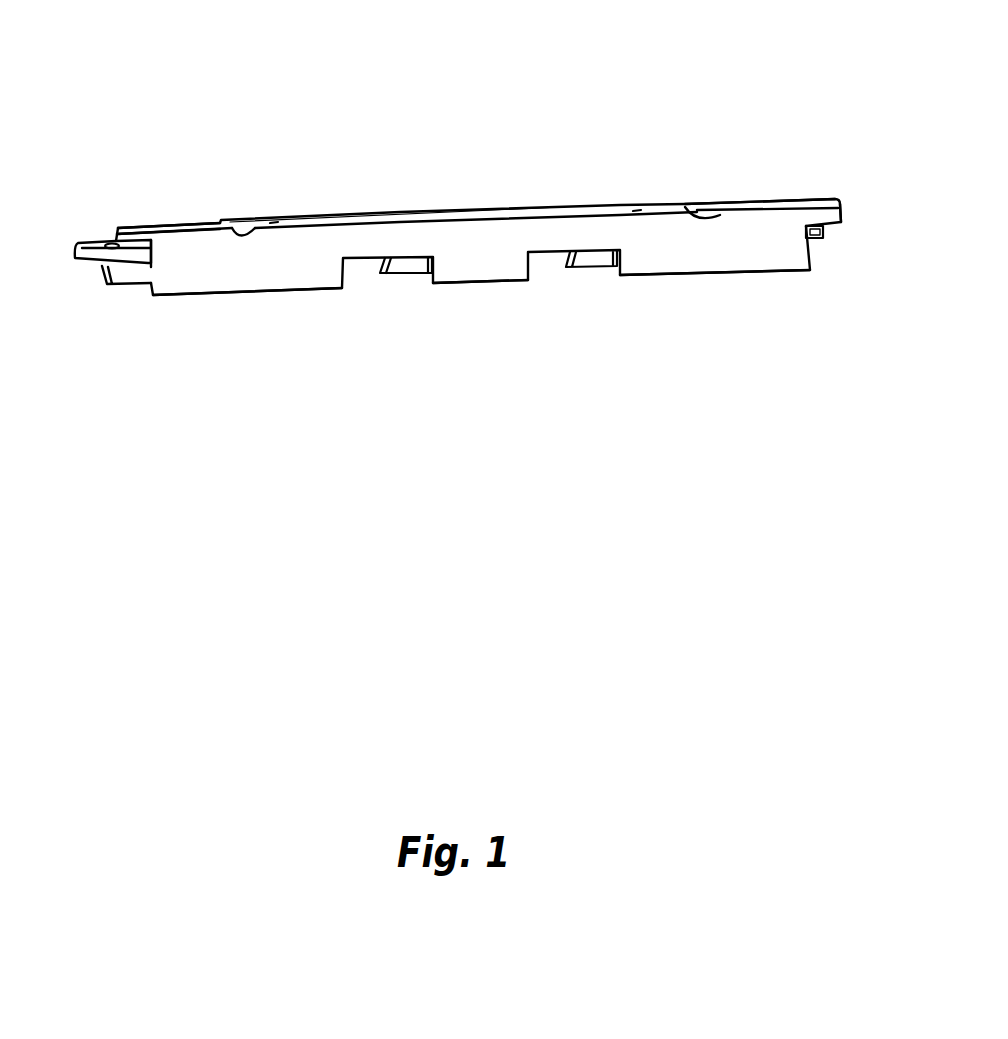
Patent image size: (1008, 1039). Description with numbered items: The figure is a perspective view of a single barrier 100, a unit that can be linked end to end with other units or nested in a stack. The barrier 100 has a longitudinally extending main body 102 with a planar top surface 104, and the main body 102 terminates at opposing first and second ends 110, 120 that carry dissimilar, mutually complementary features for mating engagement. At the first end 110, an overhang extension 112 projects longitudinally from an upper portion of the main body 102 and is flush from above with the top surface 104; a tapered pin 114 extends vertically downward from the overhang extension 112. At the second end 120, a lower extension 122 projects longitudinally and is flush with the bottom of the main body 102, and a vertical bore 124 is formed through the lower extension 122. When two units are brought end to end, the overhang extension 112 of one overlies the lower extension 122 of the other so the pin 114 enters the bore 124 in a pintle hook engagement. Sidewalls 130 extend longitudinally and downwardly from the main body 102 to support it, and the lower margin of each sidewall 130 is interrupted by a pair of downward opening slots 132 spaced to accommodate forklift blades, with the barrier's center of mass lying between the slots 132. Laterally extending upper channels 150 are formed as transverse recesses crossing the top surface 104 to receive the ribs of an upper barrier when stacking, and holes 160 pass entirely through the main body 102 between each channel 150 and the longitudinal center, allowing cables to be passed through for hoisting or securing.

The barrier 100 is at (451, 71).
The main body 102 is at (504, 216).
The top surface 104 is at (404, 217).
The first end 110 is at (763, 206).
The overhang extension 112 is at (843, 215).
The tapered pin 114 is at (814, 238).
The second end 120 is at (168, 231).
The lower extension 122 is at (80, 257).
The bore 124 is at (111, 241).
The sidewall 130 is at (218, 276).
The slot 132 is at (355, 264).
The upper channel 150 is at (217, 222).
The hole 160 is at (275, 215).